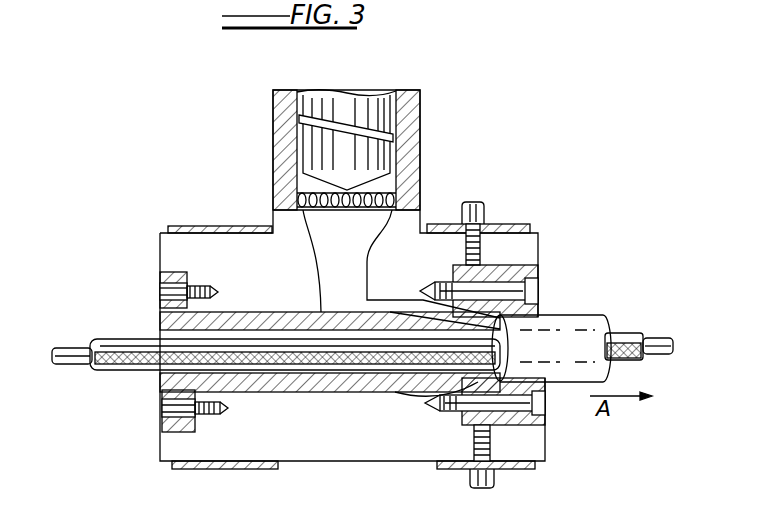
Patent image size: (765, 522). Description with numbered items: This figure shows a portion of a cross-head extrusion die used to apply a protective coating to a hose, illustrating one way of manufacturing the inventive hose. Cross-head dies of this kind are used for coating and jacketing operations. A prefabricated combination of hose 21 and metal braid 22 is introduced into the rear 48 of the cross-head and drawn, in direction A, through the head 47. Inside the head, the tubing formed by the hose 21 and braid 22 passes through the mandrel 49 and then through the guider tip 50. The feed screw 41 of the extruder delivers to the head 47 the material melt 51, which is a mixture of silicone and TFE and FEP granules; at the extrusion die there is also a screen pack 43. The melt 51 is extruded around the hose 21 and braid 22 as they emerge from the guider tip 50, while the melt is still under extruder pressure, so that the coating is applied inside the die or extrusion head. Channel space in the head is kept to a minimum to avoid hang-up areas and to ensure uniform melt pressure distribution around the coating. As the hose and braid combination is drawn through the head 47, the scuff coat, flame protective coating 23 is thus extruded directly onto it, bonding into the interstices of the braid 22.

The hose 21 is at (70, 346).
The metal braid 22 is at (96, 370).
The scuff coat, flame protective coating 23 is at (603, 318).
The feed screw 41 is at (343, 100).
The screen pack 43 is at (405, 197).
The head 47 is at (554, 221).
The rear of the cross-head 48 is at (146, 327).
The mandrel 49 is at (232, 314).
The guider tip 50 is at (538, 291).
The material melt 51 is at (352, 274).